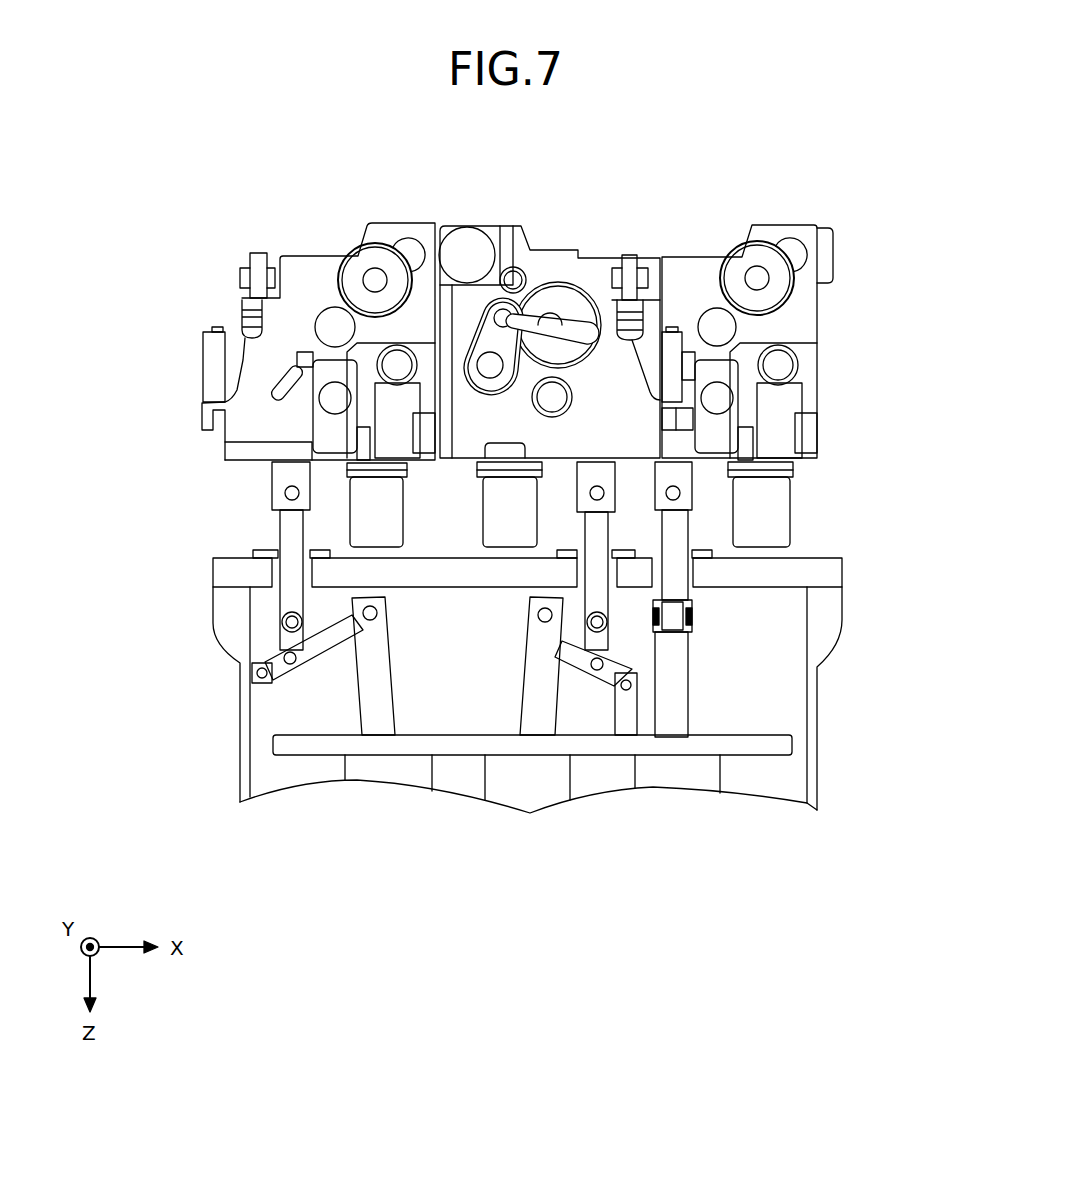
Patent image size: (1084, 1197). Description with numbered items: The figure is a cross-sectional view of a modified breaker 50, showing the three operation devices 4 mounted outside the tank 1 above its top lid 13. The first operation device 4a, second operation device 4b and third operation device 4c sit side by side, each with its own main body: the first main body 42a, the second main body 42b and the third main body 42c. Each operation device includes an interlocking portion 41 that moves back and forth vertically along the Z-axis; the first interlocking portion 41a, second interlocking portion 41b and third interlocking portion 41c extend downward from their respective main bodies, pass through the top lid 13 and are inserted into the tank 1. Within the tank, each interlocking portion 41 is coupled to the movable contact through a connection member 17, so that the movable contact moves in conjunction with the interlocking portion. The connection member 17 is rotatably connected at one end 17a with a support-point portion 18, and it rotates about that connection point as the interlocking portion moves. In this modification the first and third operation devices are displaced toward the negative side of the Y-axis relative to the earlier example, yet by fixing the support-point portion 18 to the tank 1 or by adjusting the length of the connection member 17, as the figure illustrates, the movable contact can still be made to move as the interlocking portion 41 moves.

The breaker 50 is at (639, 171).
The operation device 4 is at (521, 351).
The first operation device 4a is at (786, 216).
The second operation device 4b is at (531, 224).
The third operation device 4c is at (313, 225).
The first main body 42a is at (800, 323).
The second main body 42b is at (590, 262).
The third main body 42c is at (278, 334).
The interlocking portion 41 is at (518, 596).
The first interlocking portion 41a is at (678, 540).
The second interlocking portion 41b is at (603, 527).
The third interlocking portion 41c is at (297, 527).
The top lid 13 is at (832, 573).
The tank 1 is at (812, 730).
The connection member 17 is at (325, 645).
The one end 17a is at (276, 648).
The support-point portion 18 is at (251, 678).